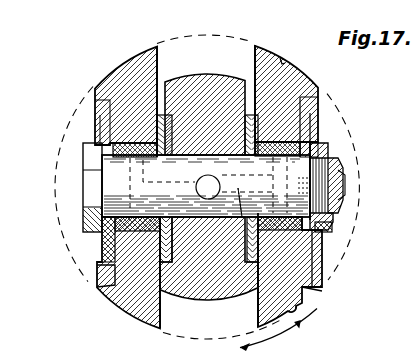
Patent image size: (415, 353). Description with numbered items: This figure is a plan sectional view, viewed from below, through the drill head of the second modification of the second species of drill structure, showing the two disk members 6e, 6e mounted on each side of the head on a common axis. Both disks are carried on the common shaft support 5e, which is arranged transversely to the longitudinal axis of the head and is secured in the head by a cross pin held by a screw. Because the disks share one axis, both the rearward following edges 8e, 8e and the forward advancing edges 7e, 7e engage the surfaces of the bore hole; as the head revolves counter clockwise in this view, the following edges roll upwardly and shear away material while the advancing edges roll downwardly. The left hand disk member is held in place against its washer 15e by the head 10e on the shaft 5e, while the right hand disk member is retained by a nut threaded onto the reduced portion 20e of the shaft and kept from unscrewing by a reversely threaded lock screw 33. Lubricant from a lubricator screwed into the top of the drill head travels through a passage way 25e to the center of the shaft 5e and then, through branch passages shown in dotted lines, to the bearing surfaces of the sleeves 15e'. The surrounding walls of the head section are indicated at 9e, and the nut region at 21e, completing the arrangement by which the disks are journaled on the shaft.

The shaft support 5e is at (110, 182).
The disk member 6e is at (88, 311).
The advancing edge 7e is at (158, 47).
The following edge 8e is at (342, 290).
The casing wall 9e is at (319, 96).
The head 10e is at (83, 157).
The washer 15e is at (258, 185).
The sleeve 15e' is at (349, 235).
The reduced portion 20e is at (339, 158).
The flange 21e is at (337, 211).
The passage way 25e is at (228, 217).
The lock screw 33 is at (343, 183).